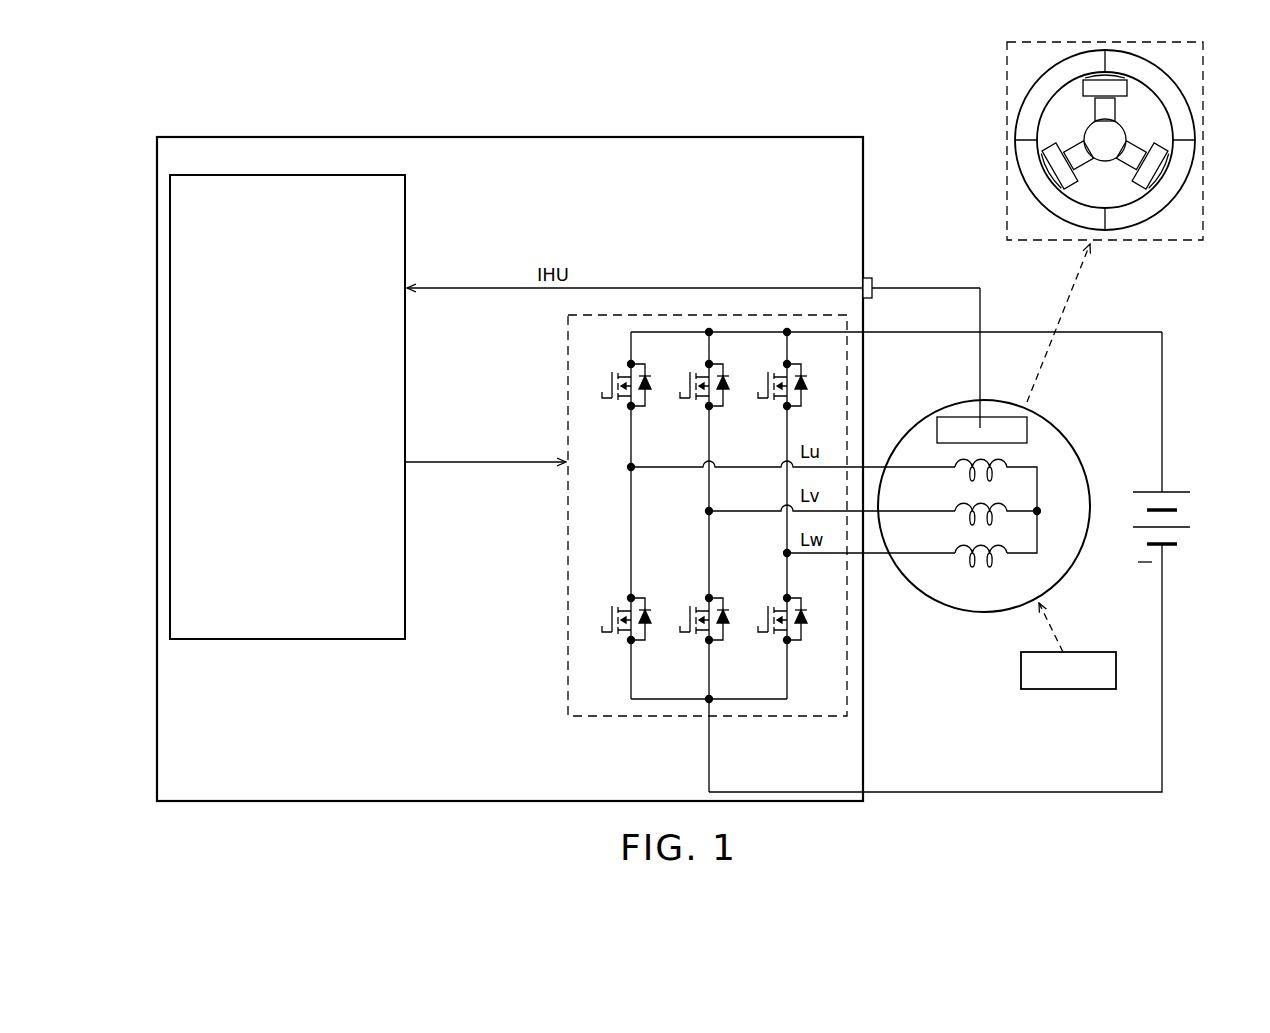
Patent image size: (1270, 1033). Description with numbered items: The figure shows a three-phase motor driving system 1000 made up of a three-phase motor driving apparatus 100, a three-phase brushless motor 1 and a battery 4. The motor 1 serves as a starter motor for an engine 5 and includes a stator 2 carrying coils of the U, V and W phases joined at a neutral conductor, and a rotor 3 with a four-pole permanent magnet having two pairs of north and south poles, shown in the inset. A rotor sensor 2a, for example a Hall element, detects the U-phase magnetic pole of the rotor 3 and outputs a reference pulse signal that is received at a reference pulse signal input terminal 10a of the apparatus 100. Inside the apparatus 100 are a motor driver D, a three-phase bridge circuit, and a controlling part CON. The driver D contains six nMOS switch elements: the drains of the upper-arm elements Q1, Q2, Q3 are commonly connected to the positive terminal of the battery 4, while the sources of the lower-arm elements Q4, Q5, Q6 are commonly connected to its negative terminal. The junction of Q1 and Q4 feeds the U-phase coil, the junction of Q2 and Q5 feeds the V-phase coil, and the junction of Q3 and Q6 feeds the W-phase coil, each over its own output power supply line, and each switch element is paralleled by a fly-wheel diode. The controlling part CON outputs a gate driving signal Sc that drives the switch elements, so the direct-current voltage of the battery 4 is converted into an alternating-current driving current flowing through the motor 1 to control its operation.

The three-phase motor driving apparatus 100 is at (406, 137).
The controlling part CON is at (195, 175).
The reference pulse signal input terminal 10a is at (868, 278).
The gate driving signal Sc is at (485, 450).
The motor driver D is at (568, 530).
The switch element Q1 is at (625, 378).
The switch element Q2 is at (703, 378).
The switch element Q3 is at (781, 378).
The switch element Q4 is at (625, 612).
The switch element Q5 is at (703, 612).
The switch element Q6 is at (781, 612).
The three-phase brushless motor 1 is at (1042, 415).
The stator 2 is at (1044, 494).
The rotor sensor 2a is at (952, 417).
The rotor 3 is at (1027, 92).
The battery 4 is at (1172, 492).
The engine 5 is at (1092, 652).
The three-phase motor driving system 1000 is at (460, 843).